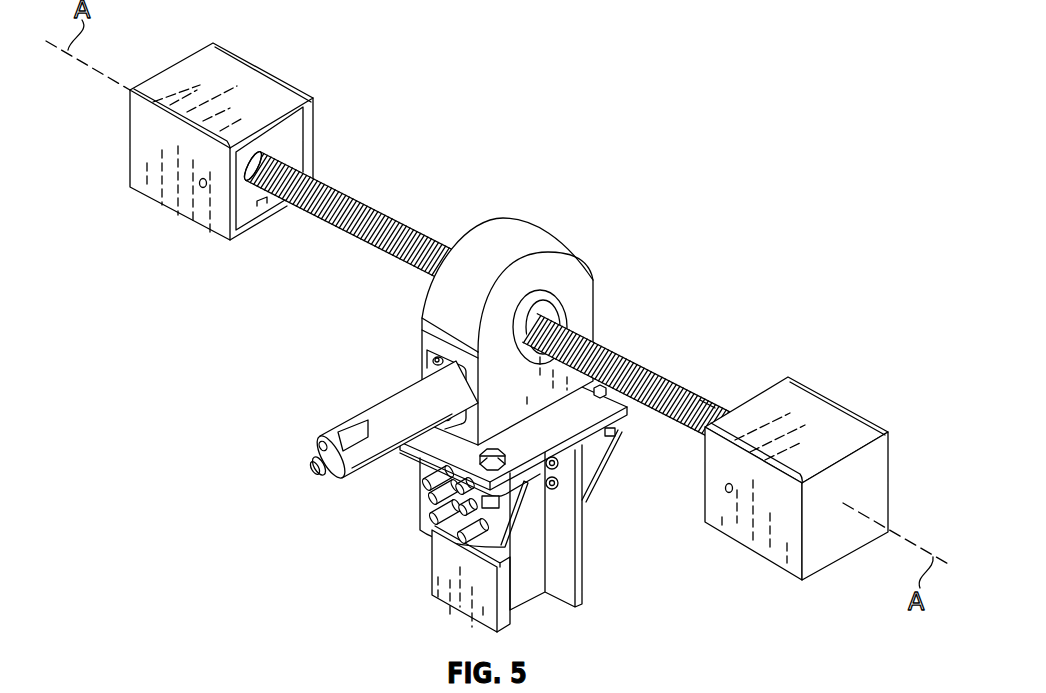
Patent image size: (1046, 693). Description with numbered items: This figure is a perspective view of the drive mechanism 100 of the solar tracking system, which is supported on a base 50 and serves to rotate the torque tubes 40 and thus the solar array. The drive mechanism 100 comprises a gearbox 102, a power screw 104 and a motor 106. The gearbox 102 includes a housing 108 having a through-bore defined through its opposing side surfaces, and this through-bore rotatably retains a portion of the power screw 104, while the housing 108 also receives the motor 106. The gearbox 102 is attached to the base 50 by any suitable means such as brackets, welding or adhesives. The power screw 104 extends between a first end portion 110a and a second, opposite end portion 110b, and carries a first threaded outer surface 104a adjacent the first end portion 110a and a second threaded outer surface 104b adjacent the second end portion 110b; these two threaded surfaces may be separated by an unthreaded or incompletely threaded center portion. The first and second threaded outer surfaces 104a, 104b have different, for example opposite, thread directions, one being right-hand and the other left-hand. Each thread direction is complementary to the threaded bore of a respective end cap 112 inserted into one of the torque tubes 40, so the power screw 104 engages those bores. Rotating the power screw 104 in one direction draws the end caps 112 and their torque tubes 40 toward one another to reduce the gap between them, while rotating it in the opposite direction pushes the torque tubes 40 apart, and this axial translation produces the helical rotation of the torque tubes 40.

The torque tube 40 is at (267, 85).
The base 50 is at (568, 568).
The drive mechanism 100 is at (498, 326).
The gearbox 102 is at (542, 220).
The power screw 104 is at (359, 220).
The first threaded outer surface 104a is at (316, 226).
The second threaded outer surface 104b is at (613, 347).
The motor 106 is at (362, 410).
The housing 108 is at (427, 340).
The first end portion 110a is at (248, 190).
The second end portion 110b is at (724, 405).
The end cap 112 is at (305, 132).